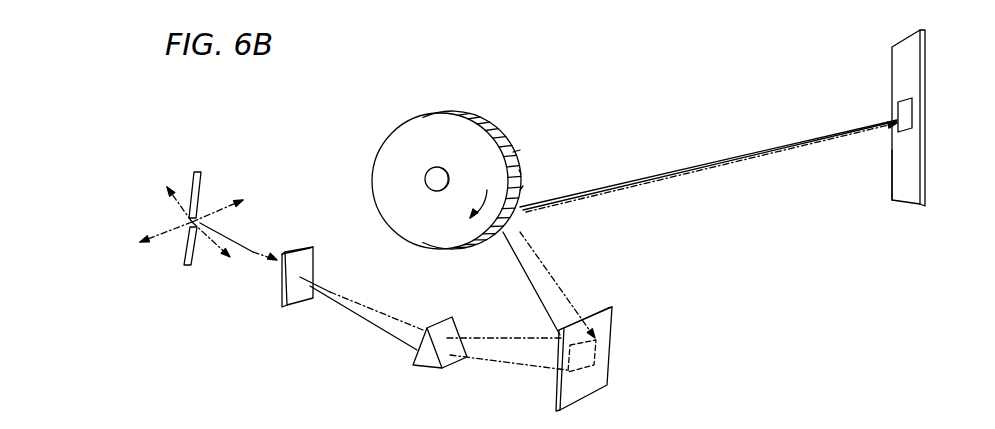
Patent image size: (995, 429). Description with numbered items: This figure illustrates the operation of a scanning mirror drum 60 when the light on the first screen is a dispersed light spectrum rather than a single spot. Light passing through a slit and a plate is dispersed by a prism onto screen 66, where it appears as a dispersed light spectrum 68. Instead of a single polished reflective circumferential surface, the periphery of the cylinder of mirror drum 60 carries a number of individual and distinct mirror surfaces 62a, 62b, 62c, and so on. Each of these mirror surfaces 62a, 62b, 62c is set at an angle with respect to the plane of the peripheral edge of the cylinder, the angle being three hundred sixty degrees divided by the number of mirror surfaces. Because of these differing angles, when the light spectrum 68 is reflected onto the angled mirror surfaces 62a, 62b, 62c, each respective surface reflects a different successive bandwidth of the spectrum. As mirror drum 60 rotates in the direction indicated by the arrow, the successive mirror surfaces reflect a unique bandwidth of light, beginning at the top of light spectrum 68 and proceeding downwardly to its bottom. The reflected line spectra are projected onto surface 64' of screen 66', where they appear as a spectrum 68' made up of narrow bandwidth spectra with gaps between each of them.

The mirror drum 60 is at (436, 225).
The mirror surface 62a is at (522, 188).
The mirror surface 62b is at (520, 172).
The mirror surface 62c is at (513, 153).
The screen 66 is at (601, 362).
The dispersed light spectrum 68 is at (620, 356).
The screen 66' is at (874, 118).
The spectrum 68' is at (867, 109).
The surface 64' is at (860, 182).